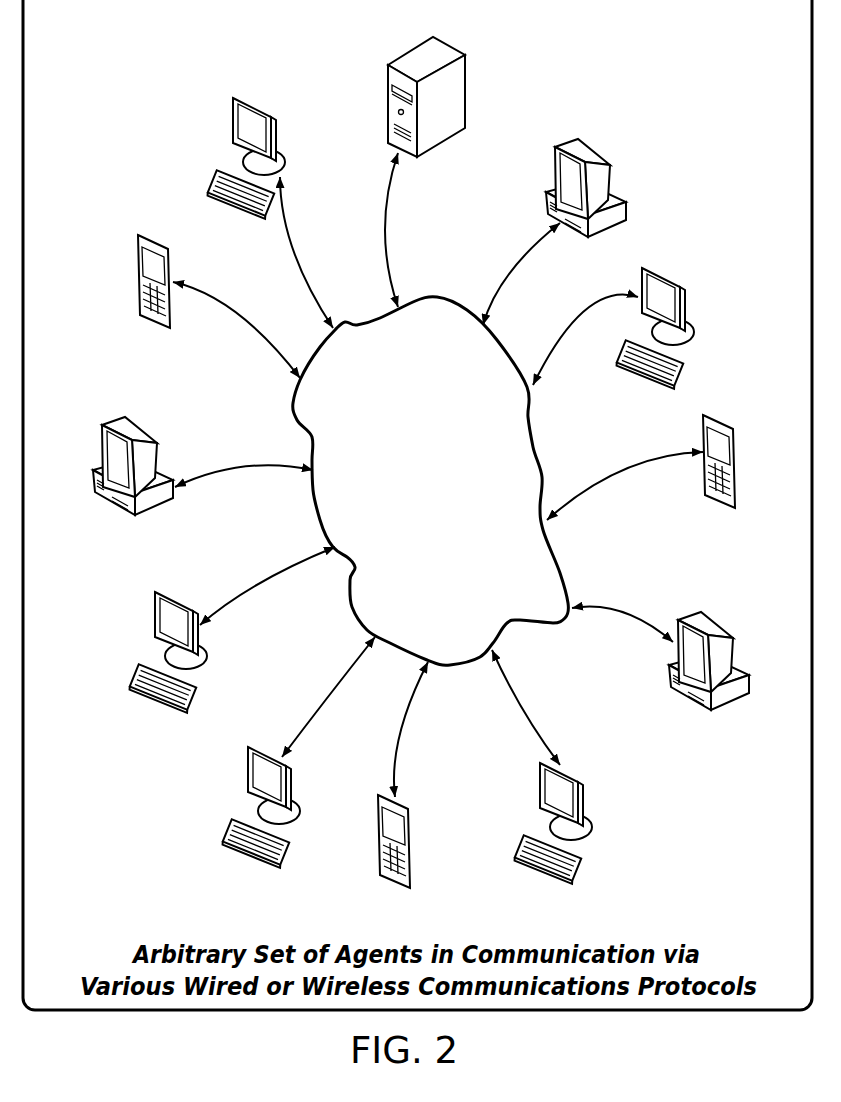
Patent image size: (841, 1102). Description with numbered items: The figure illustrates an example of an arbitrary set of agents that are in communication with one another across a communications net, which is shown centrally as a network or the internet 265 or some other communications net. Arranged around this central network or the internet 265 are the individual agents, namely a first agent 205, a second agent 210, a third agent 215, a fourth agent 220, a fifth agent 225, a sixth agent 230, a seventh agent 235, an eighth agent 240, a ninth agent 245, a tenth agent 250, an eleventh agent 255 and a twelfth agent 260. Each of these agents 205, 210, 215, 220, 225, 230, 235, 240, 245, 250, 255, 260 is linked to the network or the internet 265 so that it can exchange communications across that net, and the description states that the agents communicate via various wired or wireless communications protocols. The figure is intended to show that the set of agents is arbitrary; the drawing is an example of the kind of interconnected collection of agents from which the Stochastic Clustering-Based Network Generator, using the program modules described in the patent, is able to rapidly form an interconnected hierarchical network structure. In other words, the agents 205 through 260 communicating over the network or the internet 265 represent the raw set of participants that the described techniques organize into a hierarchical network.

The agent 205 is at (407, 808).
The agent 210 is at (579, 781).
The agent 215 is at (710, 618).
The agent 220 is at (708, 415).
The agent 225 is at (657, 268).
The agent 230 is at (582, 143).
The agent 235 is at (410, 52).
The agent 240 is at (256, 100).
The agent 245 is at (138, 261).
The agent 250 is at (148, 428).
The agent 255 is at (167, 590).
The agent 260 is at (270, 745).
The network or the internet 265 is at (464, 365).